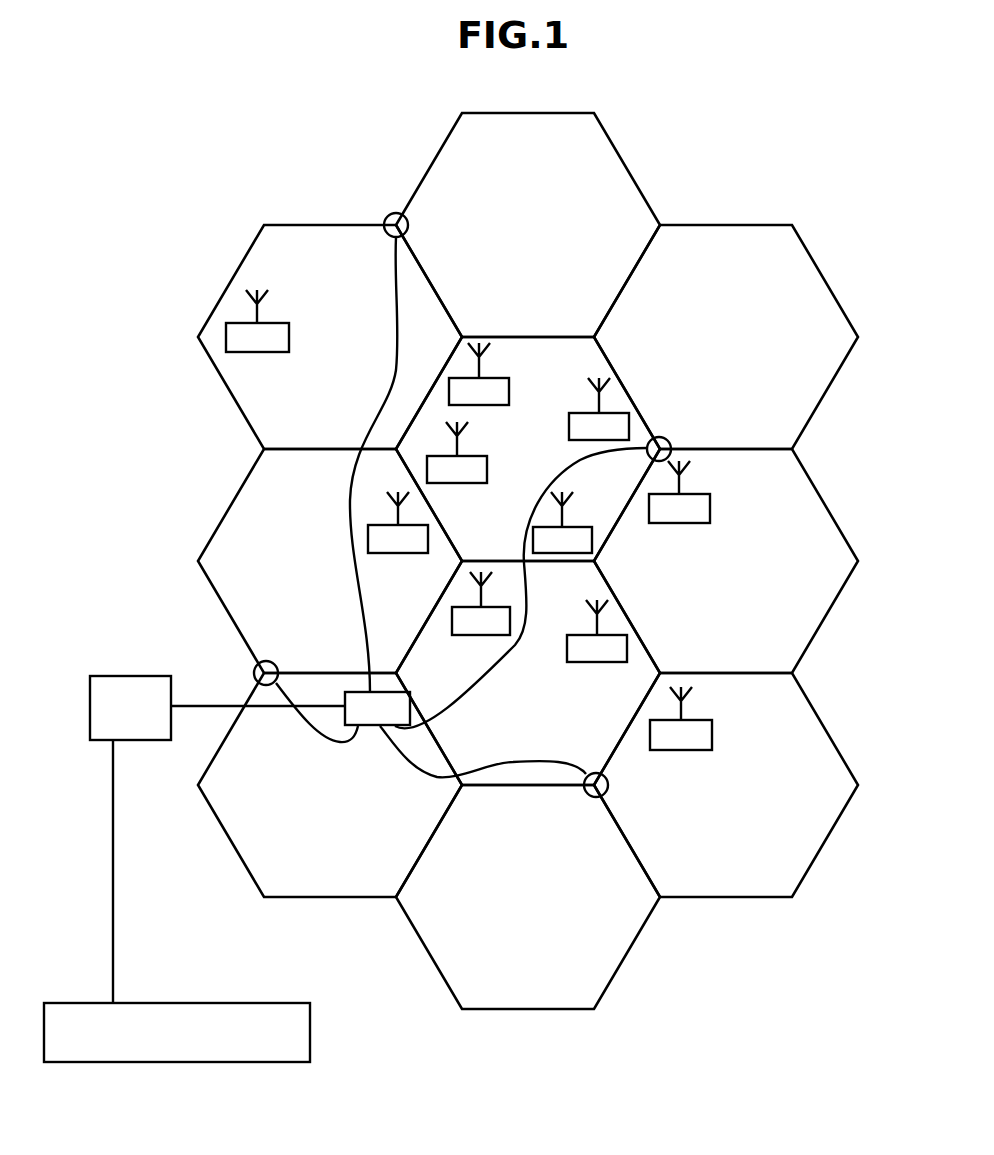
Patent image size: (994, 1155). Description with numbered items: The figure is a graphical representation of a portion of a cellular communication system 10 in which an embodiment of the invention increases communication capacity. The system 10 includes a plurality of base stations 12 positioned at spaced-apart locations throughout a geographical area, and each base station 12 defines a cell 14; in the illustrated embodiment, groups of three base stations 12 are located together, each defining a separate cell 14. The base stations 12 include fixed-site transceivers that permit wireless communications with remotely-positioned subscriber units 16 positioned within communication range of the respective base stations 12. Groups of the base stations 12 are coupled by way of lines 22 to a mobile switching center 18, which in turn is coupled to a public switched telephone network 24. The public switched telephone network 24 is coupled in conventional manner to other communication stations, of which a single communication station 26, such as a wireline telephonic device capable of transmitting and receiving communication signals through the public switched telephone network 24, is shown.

The cellular communication system 10 is at (271, 111).
The base station 12 is at (392, 237).
The cell 14 is at (342, 224).
The subscriber unit 16 is at (250, 352).
The mobile switching center 18 is at (366, 727).
The line 22 is at (363, 578).
The public switched telephone network 24 is at (132, 676).
The communication station 26 is at (72, 1003).